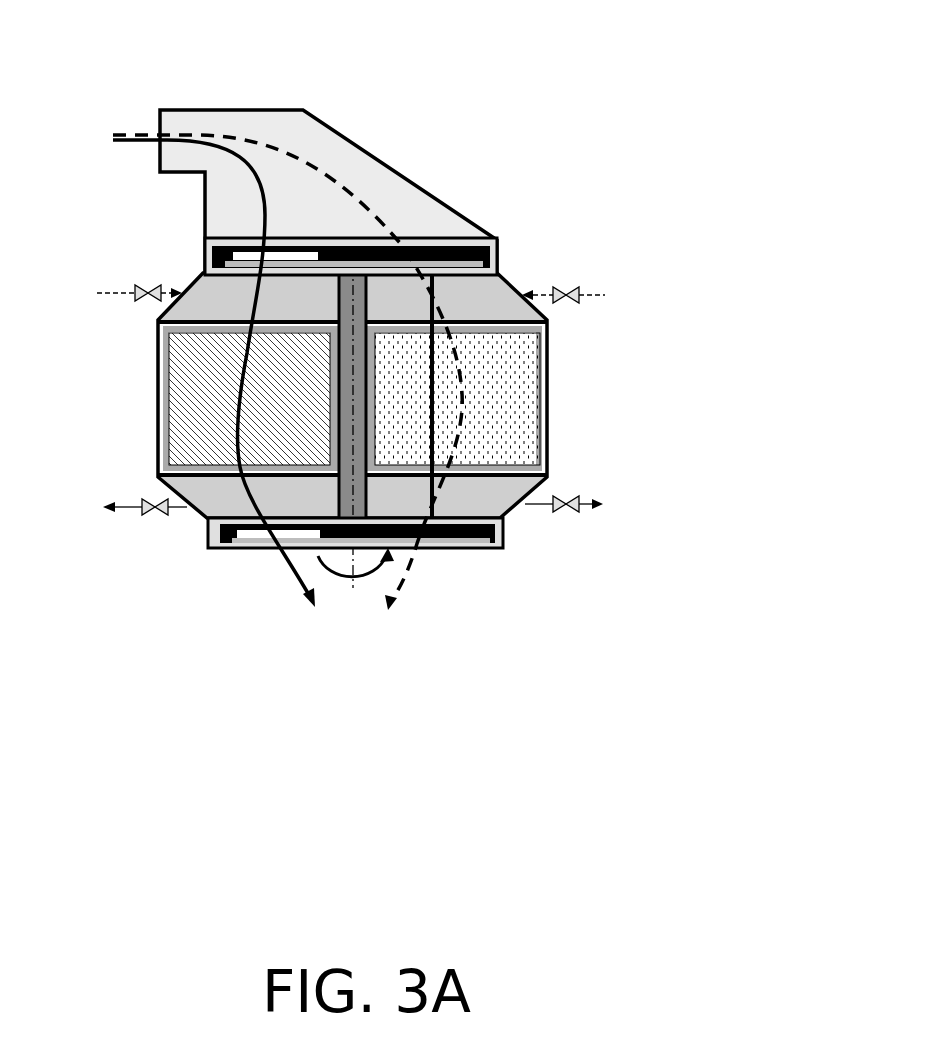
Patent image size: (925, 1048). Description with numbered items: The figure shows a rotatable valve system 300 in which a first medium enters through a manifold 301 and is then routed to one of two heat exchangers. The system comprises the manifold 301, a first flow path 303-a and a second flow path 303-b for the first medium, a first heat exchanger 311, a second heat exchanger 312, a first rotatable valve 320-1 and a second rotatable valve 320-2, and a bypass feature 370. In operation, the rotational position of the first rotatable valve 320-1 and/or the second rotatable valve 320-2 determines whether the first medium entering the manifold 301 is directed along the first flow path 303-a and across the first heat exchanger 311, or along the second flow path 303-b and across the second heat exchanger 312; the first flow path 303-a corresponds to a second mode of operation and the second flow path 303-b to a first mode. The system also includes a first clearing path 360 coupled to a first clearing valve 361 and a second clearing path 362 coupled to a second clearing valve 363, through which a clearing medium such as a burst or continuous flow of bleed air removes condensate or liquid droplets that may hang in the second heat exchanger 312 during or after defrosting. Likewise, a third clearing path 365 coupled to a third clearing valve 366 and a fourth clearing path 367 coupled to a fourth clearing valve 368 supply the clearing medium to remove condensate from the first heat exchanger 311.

The rotatable valve system 300 is at (566, 94).
The manifold 301 is at (383, 158).
The first flow path 303-a is at (263, 230).
The second flow path 303-b is at (388, 221).
The first rotatable valve 320-1 is at (501, 248).
The second rotatable valve 320-2 is at (461, 549).
The first heat exchanger 311 is at (162, 407).
The second heat exchanger 312 is at (548, 405).
The bypass feature 370 is at (436, 337).
The first clearing path 360 is at (541, 293).
The first clearing valve 361 is at (582, 293).
The second clearing path 362 is at (534, 505).
The second clearing valve 363 is at (561, 496).
The third clearing path 365 is at (167, 289).
The third clearing valve 366 is at (138, 292).
The fourth clearing path 367 is at (184, 508).
The fourth clearing valve 368 is at (143, 502).